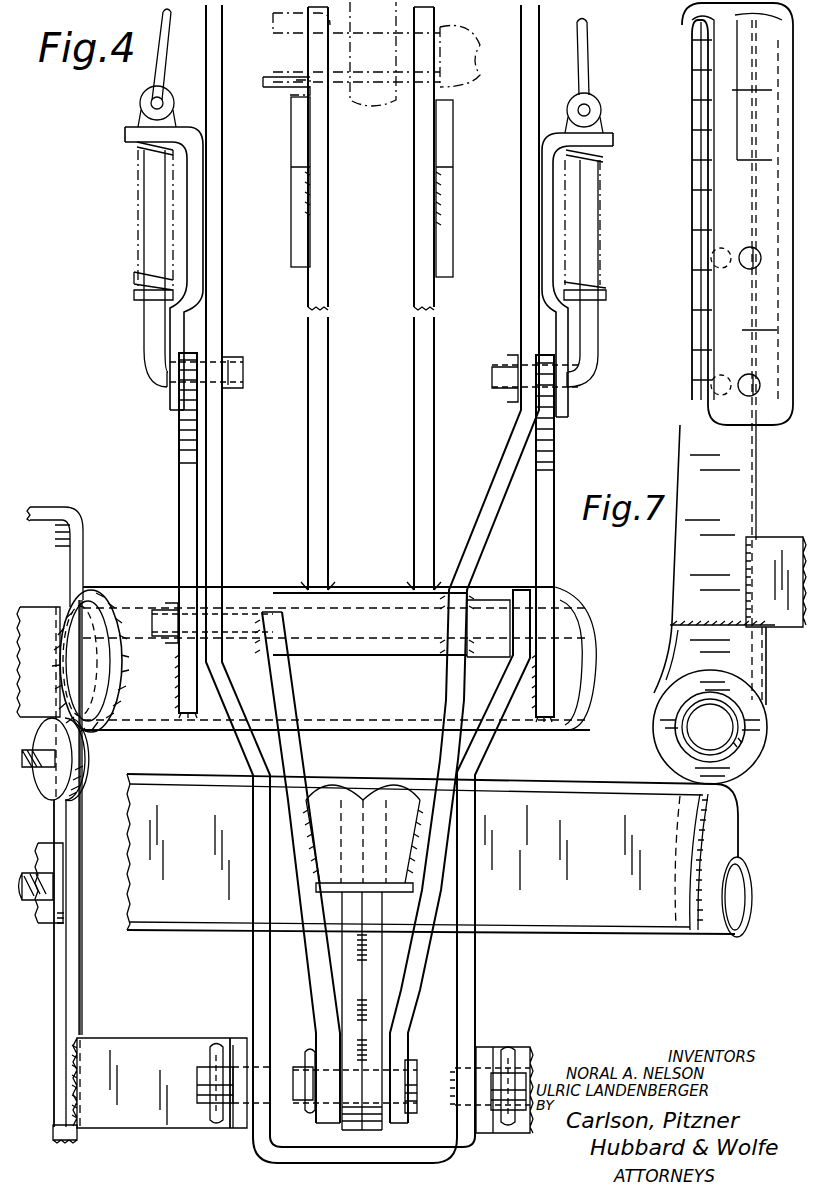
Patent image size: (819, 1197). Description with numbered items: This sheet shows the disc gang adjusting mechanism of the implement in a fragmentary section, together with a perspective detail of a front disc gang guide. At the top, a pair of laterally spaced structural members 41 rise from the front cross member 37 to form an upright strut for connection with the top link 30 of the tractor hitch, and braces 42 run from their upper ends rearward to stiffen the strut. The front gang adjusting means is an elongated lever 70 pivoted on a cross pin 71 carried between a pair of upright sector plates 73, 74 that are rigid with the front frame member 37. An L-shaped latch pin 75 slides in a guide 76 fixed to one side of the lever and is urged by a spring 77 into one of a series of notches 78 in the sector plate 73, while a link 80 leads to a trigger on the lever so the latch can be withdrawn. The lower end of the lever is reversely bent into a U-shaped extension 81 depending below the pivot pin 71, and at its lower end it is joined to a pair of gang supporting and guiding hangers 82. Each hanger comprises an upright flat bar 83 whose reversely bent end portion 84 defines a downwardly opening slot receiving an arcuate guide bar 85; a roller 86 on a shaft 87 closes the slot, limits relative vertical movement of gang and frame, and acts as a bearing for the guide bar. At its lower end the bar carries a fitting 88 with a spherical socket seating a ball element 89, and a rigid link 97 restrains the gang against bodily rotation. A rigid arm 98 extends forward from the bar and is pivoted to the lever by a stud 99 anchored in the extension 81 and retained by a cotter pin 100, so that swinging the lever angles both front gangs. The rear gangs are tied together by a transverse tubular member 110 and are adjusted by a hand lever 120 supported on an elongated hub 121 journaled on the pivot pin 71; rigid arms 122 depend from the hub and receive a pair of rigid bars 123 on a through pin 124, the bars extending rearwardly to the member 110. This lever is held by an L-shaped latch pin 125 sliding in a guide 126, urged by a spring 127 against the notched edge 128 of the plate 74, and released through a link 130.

In FIG. 4, the top link 30 is at (377, 100).
In FIG. 4, the front cross member 37 is at (578, 598).
In FIG. 4, the structural members 41 is at (410, 428).
In FIG. 4, the braces 42 is at (289, 234).
In FIG. 4, the lever 70 is at (216, 449).
In FIG. 4, the cross pin 71 is at (158, 640).
In FIG. 4, the sector plate 73 is at (179, 493).
In FIG. 4, the sector plate 74 is at (556, 470).
In FIG. 4, the latch pin 75 is at (144, 318).
In FIG. 4, the guide 76 is at (136, 128).
In FIG. 4, the spring 77 is at (136, 211).
In FIG. 4, the notches 78 is at (188, 440).
In FIG. 4, the link 80 is at (158, 65).
In FIG. 4, the U-shaped extension 81 is at (253, 961).
In FIG. 4, the hangers 82 is at (92, 539).
In FIG. 7, the hangers 82 is at (764, 446).
In FIG. 4, the bar 83 is at (80, 968).
In FIG. 7, the end portion 84 is at (780, 208).
In FIG. 4, the guide bar 85 is at (34, 607).
In FIG. 4, the roller 86 is at (80, 786).
In FIG. 4, the shaft 87 is at (27, 770).
In FIG. 4, the fitting 88 is at (62, 1143).
In FIG. 7, the fitting 88 is at (670, 655).
In FIG. 7, the ball element 89 is at (735, 735).
In FIG. 4, the link 97 is at (42, 922).
In FIG. 4, the arm 98 is at (118, 1128).
In FIG. 7, the arm 98 is at (760, 537).
In FIG. 4, the stud 99 is at (197, 1075).
In FIG. 4, the cotter pin 100 is at (217, 1045).
In FIG. 4, the tubular member 110 is at (730, 933).
In FIG. 4, the hand lever 120 is at (522, 332).
In FIG. 4, the hub 121 is at (302, 657).
In FIG. 4, the arms 122 is at (299, 742).
In FIG. 4, the bars 123 is at (375, 990).
In FIG. 4, the through pin 124 is at (302, 1100).
In FIG. 4, the latch pin 125 is at (598, 346).
In FIG. 4, the guide 126 is at (606, 134).
In FIG. 4, the spring 127 is at (606, 234).
In FIG. 4, the notched edge 128 is at (556, 440).
In FIG. 4, the link 130 is at (588, 45).